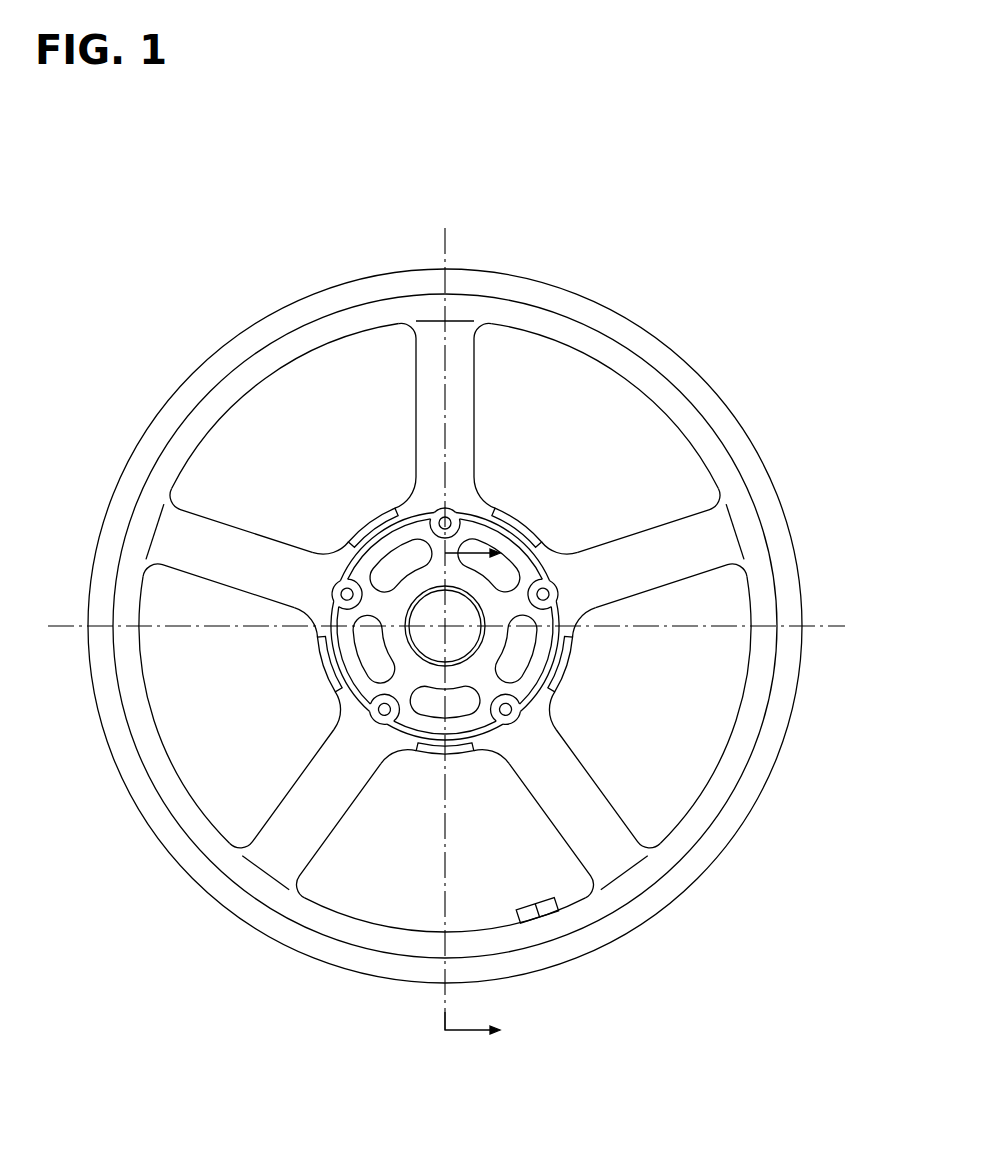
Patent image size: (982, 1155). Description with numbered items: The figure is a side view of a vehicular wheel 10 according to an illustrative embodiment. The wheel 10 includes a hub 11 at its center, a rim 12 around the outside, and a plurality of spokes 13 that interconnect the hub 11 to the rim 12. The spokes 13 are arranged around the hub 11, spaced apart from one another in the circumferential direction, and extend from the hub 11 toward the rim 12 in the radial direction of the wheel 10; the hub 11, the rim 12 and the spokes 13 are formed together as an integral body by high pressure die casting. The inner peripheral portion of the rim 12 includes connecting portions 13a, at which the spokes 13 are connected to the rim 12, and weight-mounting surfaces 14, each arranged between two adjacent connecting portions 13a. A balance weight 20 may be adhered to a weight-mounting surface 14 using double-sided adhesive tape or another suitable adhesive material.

The vehicular wheel 10 is at (583, 258).
The hub 11 is at (385, 547).
The rim 12 is at (648, 350).
The spokes 13 is at (432, 402).
The connecting portions 13a is at (458, 320).
The weight-mounting surfaces 14 is at (270, 372).
The balance weight 20 is at (541, 923).